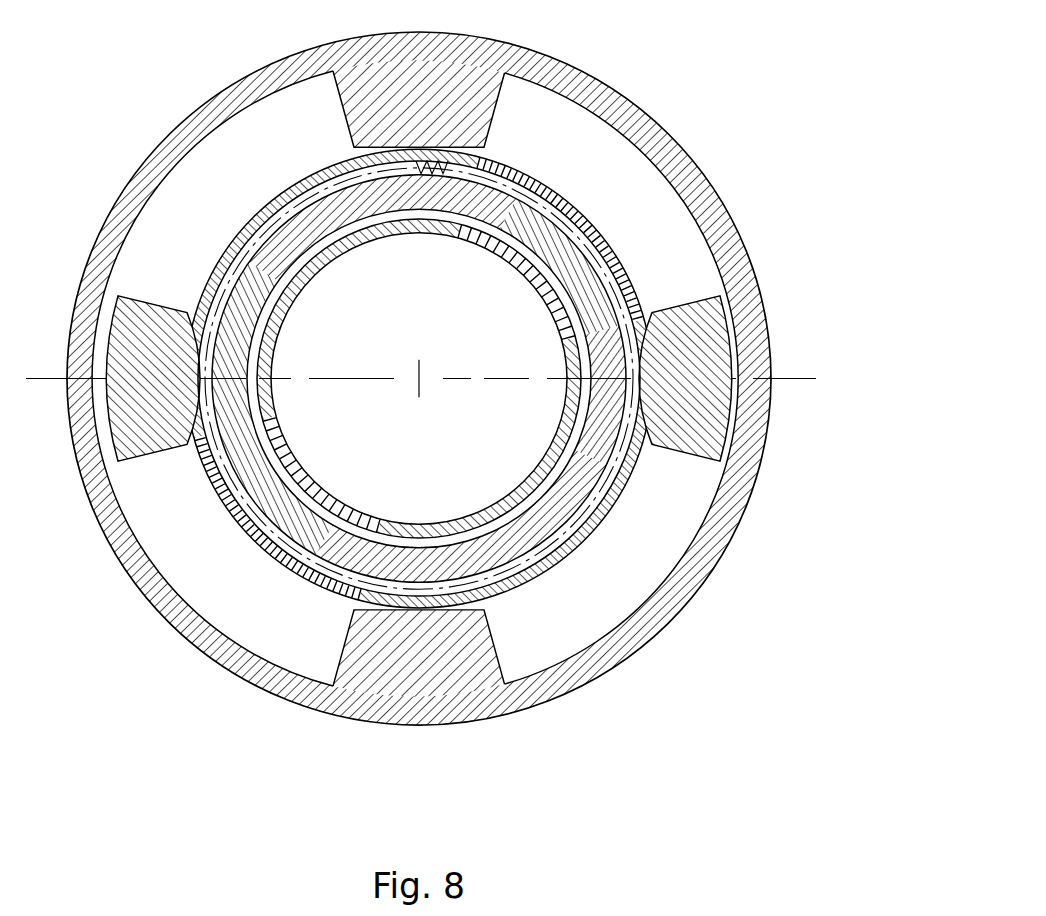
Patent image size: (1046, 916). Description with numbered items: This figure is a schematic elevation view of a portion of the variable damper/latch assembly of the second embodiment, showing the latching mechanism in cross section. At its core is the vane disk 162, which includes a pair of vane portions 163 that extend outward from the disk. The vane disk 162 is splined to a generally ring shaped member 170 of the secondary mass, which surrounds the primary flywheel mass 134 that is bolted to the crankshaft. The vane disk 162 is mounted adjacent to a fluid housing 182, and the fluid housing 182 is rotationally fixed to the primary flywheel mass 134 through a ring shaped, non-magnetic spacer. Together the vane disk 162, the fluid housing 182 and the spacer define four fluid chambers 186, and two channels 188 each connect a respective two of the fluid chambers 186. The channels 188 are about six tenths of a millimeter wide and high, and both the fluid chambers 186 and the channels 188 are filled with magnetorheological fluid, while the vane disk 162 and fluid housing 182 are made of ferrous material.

The primary flywheel mass 134 is at (300, 468).
The vane disk 162 is at (430, 613).
The vane portions 163 is at (102, 420).
The ring shaped member 170 is at (300, 272).
The fluid housing 182 is at (580, 82).
The fluid chambers 186 is at (220, 120).
The channels 188 is at (92, 330).